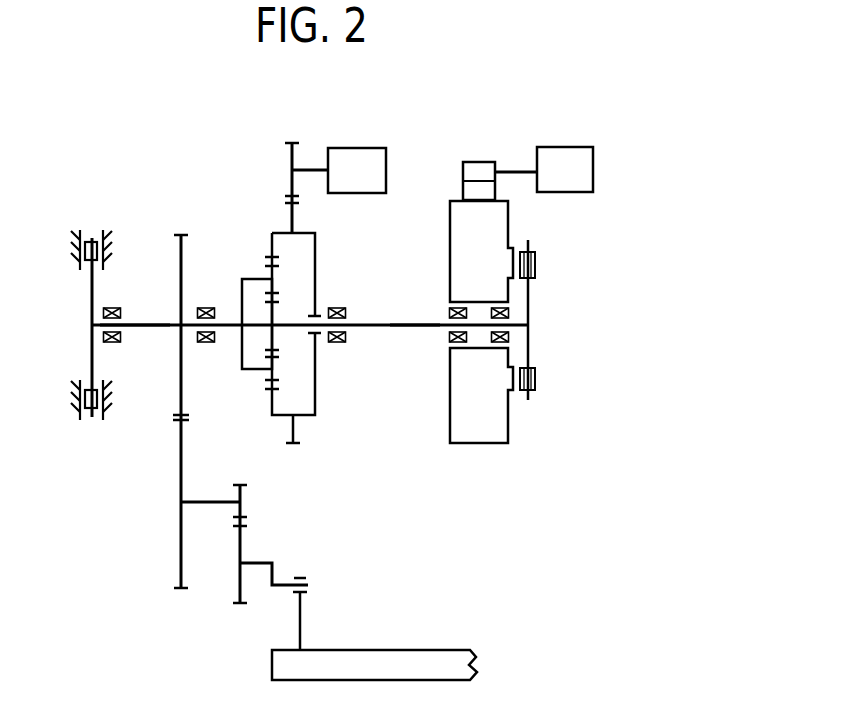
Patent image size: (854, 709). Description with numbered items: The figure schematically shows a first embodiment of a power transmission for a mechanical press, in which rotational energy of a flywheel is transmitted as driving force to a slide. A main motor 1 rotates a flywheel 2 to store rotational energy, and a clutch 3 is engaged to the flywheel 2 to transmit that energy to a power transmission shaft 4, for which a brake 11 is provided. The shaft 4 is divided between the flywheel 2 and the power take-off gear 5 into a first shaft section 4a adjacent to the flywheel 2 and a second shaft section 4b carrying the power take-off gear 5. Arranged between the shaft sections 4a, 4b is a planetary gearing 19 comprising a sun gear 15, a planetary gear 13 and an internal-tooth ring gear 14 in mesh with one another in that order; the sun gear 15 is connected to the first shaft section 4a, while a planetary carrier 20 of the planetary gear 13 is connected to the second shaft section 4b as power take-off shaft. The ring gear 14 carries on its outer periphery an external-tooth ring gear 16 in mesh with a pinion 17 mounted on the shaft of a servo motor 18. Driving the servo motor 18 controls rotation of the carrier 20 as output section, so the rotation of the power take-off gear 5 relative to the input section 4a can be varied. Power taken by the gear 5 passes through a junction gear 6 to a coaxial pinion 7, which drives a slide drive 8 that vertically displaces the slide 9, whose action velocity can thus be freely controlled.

The main motor 1 is at (593, 170).
The flywheel 2 is at (508, 436).
The clutch 3 is at (536, 380).
The power transmission shaft 4 is at (422, 309).
The first shaft section 4a is at (405, 329).
The second shaft section 4b is at (141, 331).
The power take-off gear 5 is at (181, 252).
The junction gear 6 is at (181, 472).
The pinion 7 is at (240, 510).
The slide drive 8 is at (328, 573).
The slide 9 is at (432, 650).
The brake 11 is at (85, 232).
The planetary gear 13 is at (265, 376).
The internal-tooth ring gear 14 is at (272, 250).
The sun gear 15 is at (268, 341).
The external-tooth ring gear 16 is at (292, 217).
The pinion 17 is at (292, 157).
The servo motor 18 is at (348, 148).
The planetary gearing 19 is at (282, 343).
The planetary carrier 20 is at (242, 295).